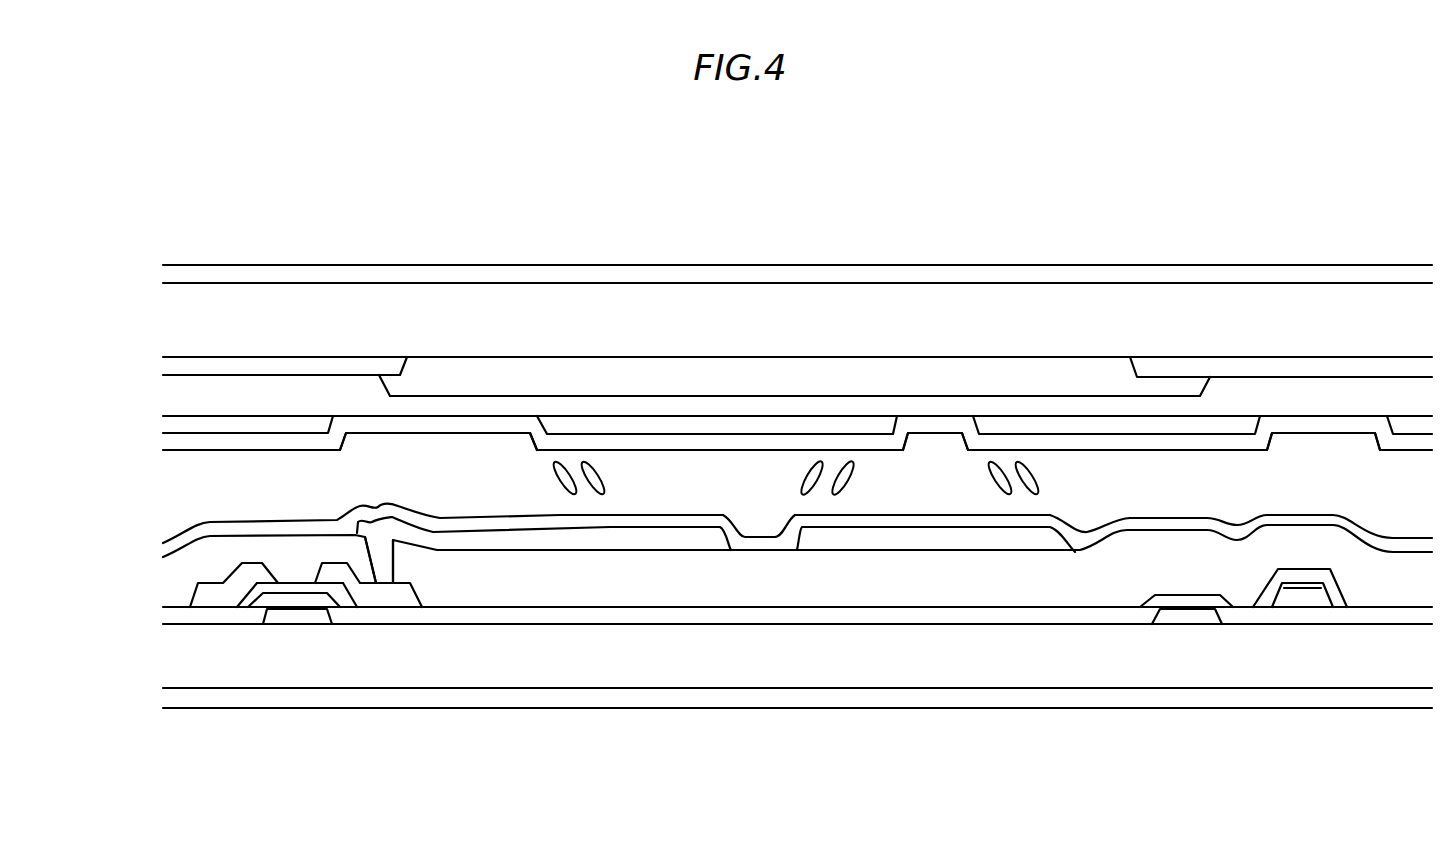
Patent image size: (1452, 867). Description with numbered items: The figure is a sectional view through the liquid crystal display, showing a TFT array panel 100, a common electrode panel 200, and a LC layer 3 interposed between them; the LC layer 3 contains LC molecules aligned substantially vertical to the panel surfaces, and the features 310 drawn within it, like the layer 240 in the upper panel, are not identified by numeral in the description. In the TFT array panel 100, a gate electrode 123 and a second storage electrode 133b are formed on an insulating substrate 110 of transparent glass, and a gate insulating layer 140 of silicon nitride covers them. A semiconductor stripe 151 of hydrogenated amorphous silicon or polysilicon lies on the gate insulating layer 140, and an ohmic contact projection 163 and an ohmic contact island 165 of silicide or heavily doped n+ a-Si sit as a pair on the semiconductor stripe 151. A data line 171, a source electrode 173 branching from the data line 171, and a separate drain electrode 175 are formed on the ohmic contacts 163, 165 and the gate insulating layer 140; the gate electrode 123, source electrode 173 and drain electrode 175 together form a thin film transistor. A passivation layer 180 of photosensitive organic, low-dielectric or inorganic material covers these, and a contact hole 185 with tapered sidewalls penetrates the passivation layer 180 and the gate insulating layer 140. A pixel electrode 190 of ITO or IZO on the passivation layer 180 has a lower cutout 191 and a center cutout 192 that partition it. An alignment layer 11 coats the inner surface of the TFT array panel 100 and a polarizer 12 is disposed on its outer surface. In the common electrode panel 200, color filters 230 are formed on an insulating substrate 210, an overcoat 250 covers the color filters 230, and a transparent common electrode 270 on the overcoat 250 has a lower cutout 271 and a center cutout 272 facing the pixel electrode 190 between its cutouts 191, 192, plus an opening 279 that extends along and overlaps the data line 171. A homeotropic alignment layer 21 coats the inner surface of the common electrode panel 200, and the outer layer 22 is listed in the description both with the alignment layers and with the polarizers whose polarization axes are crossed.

The LC layer 3 is at (591, 361).
The alignment layer 11 is at (992, 523).
The polarizer 12 is at (1393, 700).
The homeotropic alignment layer 21 is at (1092, 440).
The polarizer 22 is at (1381, 275).
The TFT array panel 100 is at (157, 543).
The insulating substrate 110 is at (875, 672).
The gate electrode 123 is at (310, 615).
The second storage electrode 133b is at (1185, 617).
The gate insulating layer 140 is at (790, 612).
The semiconductor stripe 151 is at (282, 597).
The projection of ohmic contact stripe 163 is at (260, 586).
The ohmic contact island 165 is at (335, 588).
The data line 171 is at (1262, 600).
The source electrode 173 is at (217, 598).
The drain electrode 175 is at (385, 598).
The passivation layer 180 is at (702, 592).
The contact hole 185 is at (386, 578).
The pixel electrode 190 is at (607, 540).
The lower cutout 191 is at (757, 510).
The center cutout 192 is at (1092, 524).
The common electrode panel 200 is at (157, 265).
The insulating substrate 210 is at (510, 297).
The color filter 230 is at (304, 367).
The color filter 240 is at (773, 370).
The overcoat 250 is at (644, 403).
The common electrode 270 is at (852, 427).
The lower cutout 271 is at (441, 437).
The center cutout 272 is at (937, 432).
The opening 279 is at (1327, 433).
The liquid crystal molecules 310 is at (1023, 460).